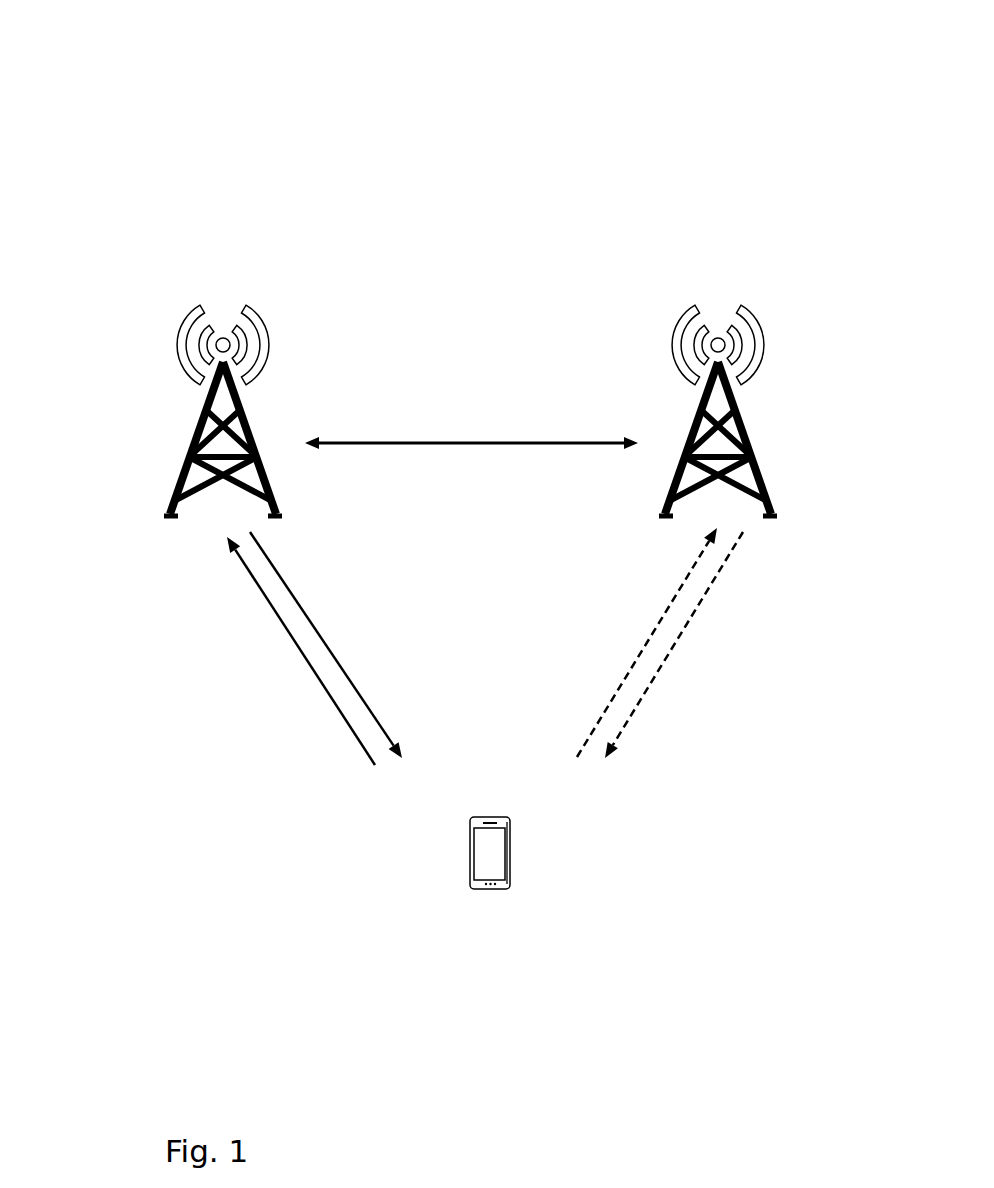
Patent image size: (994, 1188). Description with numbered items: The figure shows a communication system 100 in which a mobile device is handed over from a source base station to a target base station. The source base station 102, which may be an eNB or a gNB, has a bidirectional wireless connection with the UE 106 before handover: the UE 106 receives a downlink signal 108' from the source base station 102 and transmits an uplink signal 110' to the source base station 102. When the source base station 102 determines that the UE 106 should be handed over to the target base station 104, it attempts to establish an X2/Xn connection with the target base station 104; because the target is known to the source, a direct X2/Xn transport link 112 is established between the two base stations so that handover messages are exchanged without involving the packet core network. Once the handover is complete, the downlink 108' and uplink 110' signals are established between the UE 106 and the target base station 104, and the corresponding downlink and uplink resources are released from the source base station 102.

The wireless communication system 100 is at (474, 452).
The source base station 102 is at (155, 360).
The target base station 104 is at (785, 360).
The UE 106 is at (525, 872).
The downlink signal 108' is at (501, 645).
The uplink signal 110' is at (461, 646).
The X2/Xn transport link 112 is at (413, 462).